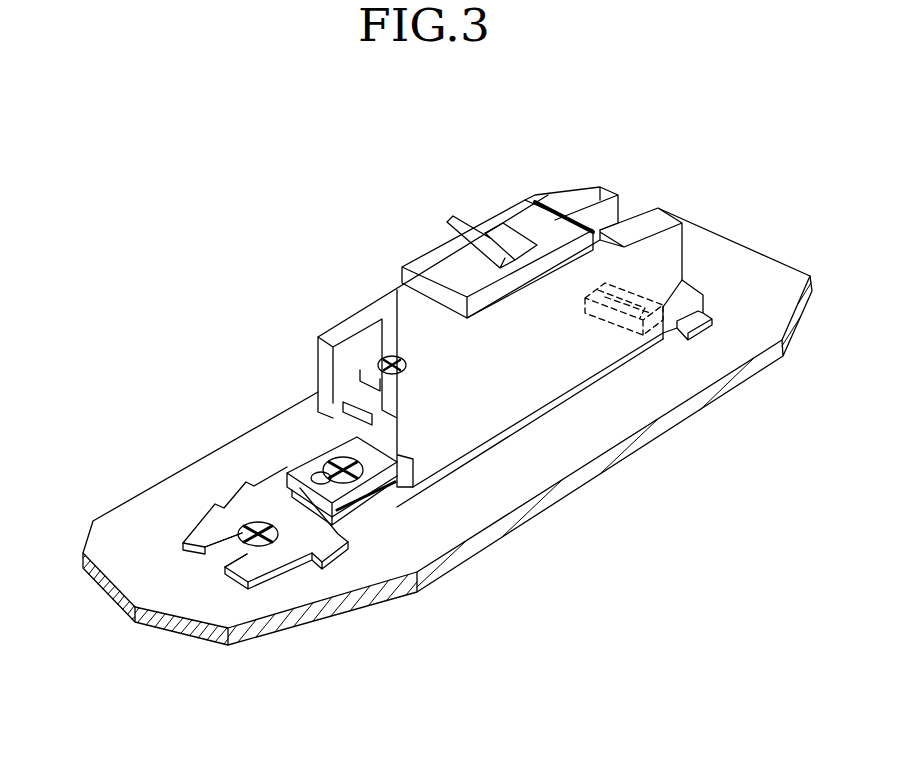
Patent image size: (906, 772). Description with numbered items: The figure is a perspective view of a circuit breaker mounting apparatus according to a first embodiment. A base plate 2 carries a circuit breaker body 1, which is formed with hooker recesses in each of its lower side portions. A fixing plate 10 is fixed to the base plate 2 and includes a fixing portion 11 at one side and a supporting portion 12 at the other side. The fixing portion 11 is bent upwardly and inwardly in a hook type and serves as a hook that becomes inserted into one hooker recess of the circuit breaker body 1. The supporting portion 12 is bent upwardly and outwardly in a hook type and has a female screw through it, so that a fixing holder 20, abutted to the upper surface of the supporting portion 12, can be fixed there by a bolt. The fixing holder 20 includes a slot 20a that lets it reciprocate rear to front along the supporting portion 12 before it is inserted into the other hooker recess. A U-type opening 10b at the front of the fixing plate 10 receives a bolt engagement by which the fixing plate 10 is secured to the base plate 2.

The circuit breaker body 1 is at (388, 266).
The base plate 2 is at (108, 533).
The fixing plate 10 is at (204, 490).
The U-type opening 10b is at (220, 560).
The fixing portion 11 is at (633, 288).
The supporting portion 12 is at (360, 501).
The fixing holder 20 is at (307, 467).
The slot 20a is at (320, 468).